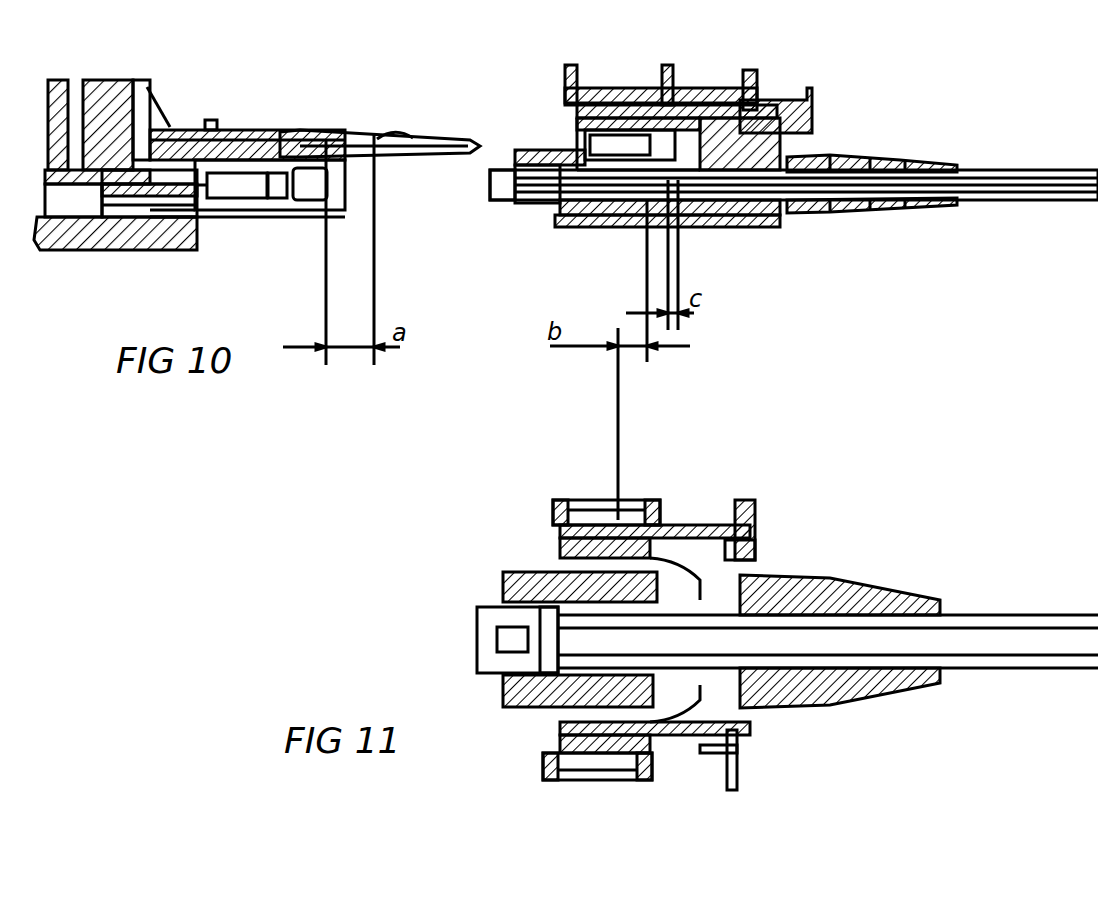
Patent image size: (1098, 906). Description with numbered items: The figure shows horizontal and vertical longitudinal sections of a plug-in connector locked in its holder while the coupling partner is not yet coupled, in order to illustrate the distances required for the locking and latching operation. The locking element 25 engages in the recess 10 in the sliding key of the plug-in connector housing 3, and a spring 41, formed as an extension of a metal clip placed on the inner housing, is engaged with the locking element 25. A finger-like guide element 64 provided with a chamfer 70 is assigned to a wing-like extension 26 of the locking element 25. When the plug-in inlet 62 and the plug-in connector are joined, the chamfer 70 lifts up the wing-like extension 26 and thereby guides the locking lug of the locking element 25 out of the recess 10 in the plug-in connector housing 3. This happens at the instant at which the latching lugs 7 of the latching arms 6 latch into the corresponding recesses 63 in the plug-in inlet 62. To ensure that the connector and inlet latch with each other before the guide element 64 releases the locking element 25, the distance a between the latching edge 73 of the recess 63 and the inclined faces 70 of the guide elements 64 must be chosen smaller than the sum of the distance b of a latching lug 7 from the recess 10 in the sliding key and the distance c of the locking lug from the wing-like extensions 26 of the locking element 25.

In FIG. 10, the plug-in inlet 62 is at (263, 128).
In FIG. 10, the recess 63 is at (311, 176).
In FIG. 10, the chamfer 70 is at (387, 128).
In FIG. 10, the finger-like guide element 64 is at (443, 140).
In FIG. 10, the latching edge 73 is at (318, 186).
In FIG. 11, the recess 10 is at (678, 104).
In FIG. 11, the wing-like extension 26 is at (713, 104).
In FIG. 11, the spring 41 is at (742, 118).
In FIG. 11, the locking element 25 is at (773, 102).
In FIG. 11, the plug-in connector housing 3 is at (783, 144).
In FIG. 11, the latching lug 7 is at (594, 522).
In FIG. 11, the latching arm 6 is at (683, 595).